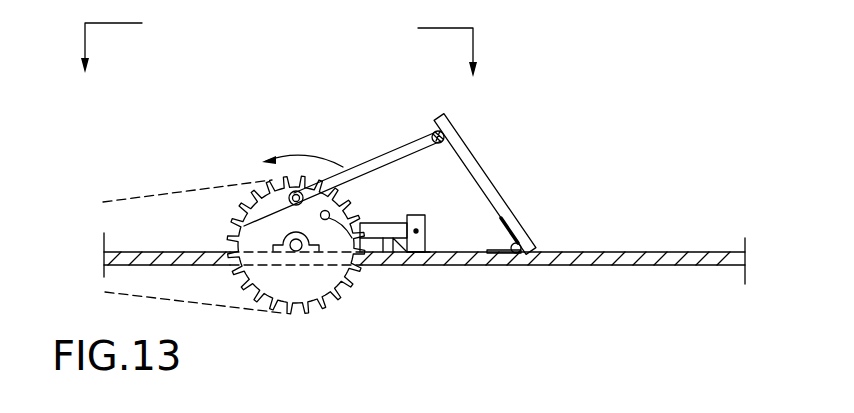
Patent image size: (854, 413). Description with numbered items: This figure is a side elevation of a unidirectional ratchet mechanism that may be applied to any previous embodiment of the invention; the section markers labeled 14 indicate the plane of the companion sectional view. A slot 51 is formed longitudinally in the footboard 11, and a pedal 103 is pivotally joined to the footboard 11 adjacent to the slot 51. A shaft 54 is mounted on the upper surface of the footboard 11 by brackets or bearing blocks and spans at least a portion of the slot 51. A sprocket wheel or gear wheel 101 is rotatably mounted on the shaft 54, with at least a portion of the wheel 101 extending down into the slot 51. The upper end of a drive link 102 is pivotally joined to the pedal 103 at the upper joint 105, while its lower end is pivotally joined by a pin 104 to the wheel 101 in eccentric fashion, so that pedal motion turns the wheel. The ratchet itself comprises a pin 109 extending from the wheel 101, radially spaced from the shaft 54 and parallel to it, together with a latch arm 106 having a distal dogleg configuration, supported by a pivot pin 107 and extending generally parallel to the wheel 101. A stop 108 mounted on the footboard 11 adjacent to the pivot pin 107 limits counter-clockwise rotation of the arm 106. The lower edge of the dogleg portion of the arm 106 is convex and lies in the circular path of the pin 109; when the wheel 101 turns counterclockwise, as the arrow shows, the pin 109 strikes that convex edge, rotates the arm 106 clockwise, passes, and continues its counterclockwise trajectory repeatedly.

The footboard 11 is at (617, 266).
The section line 14- 14 is at (278, 68).
The slot 51 is at (249, 288).
The shaft 54 is at (292, 252).
The gear wheel 101 is at (242, 216).
The drive link 102 is at (381, 155).
The pedal 103 is at (503, 192).
The pin 104 is at (244, 224).
The pivot pin 105 is at (441, 142).
The latch arm 106 is at (380, 222).
The pivot pin 107 is at (425, 237).
The stop 108 is at (420, 255).
The pin 109 is at (327, 220).